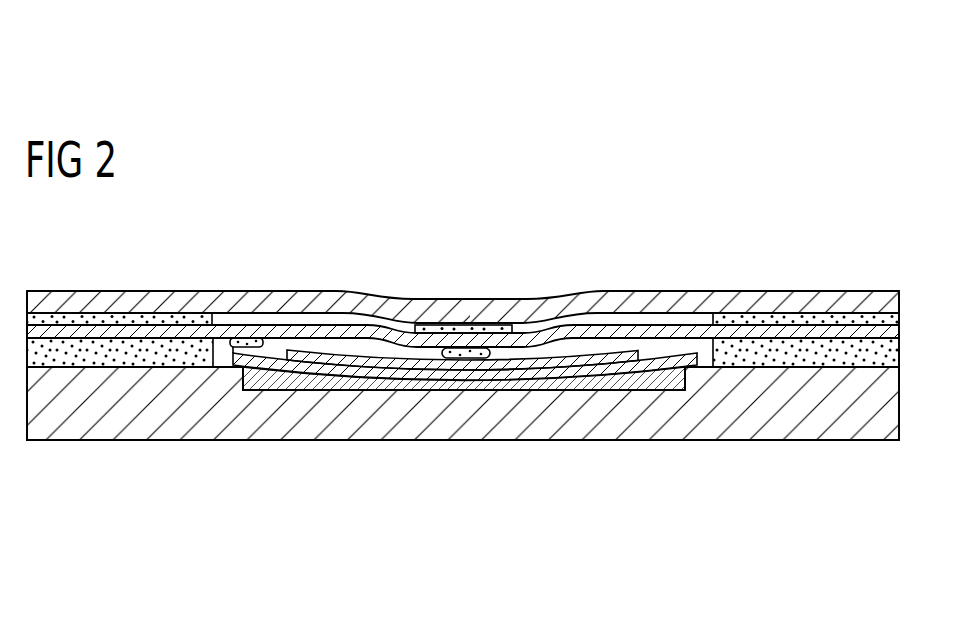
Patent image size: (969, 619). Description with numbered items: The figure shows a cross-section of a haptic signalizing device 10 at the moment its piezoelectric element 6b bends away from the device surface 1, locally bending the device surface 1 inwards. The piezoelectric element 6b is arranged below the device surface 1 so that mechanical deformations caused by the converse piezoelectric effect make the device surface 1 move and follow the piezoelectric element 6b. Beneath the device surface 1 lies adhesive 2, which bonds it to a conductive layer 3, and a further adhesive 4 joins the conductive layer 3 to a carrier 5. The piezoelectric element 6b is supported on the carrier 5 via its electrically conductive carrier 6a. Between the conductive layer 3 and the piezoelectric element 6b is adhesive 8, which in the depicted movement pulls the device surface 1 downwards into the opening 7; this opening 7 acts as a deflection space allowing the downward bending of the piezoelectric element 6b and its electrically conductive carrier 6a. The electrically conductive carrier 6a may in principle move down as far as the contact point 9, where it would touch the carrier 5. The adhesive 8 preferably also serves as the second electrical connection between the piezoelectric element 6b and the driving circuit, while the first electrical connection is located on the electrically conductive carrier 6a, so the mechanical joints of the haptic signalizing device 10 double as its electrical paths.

The device surface 1 is at (815, 302).
The adhesive 2 is at (870, 320).
The conductive layer 3 is at (758, 330).
The adhesive 4 is at (750, 350).
The carrier 5 is at (822, 420).
The electrically conductive carrier 6a is at (583, 377).
The piezoelectric element 6b is at (537, 363).
The opening 7 is at (633, 380).
The adhesive 8 is at (247, 338).
The contact point 9 is at (457, 393).
The haptic signalizing device 10 is at (558, 572).